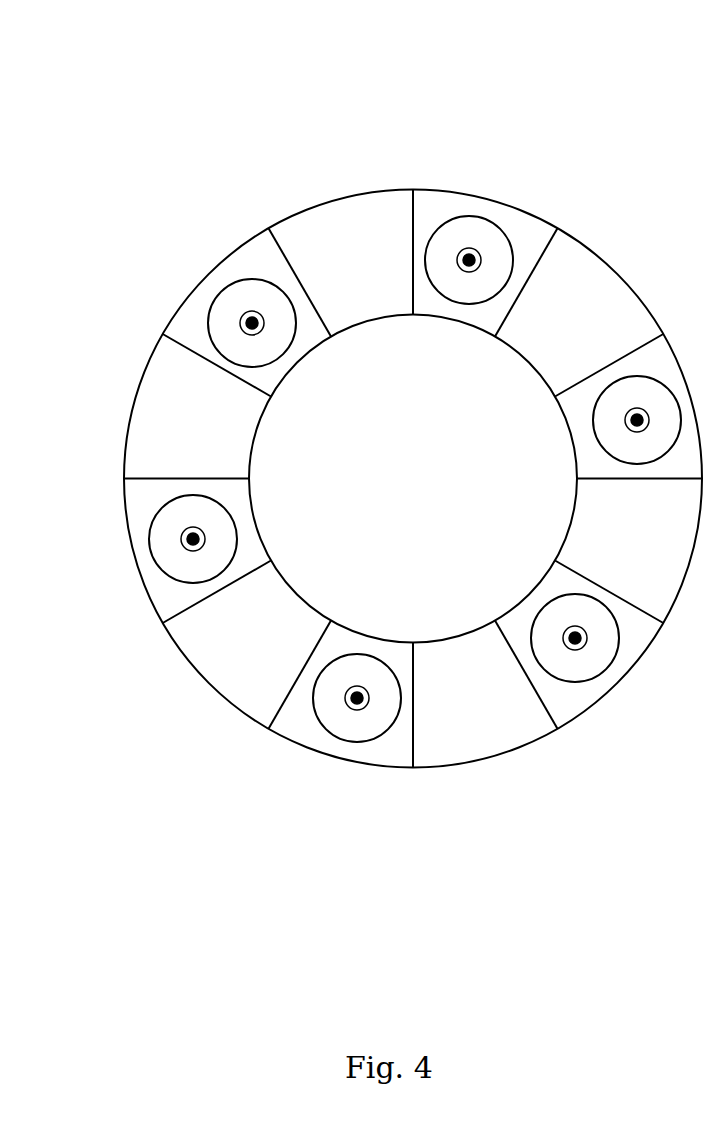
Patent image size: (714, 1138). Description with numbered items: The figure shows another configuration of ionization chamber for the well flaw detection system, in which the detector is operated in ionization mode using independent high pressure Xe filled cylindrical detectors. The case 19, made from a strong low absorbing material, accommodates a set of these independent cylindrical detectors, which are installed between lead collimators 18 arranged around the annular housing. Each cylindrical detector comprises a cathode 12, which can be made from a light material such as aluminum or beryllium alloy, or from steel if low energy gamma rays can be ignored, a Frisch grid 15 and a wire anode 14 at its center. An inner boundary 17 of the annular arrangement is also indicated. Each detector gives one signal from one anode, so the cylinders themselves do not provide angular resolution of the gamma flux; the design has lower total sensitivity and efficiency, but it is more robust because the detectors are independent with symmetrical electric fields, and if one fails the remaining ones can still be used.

The cathode 12 is at (572, 681).
The wire anode 14 is at (186, 548).
The Frisch grid 15 is at (240, 330).
The inner wall 17 is at (360, 635).
The lead collimators 18 is at (458, 768).
The case 19 is at (493, 202).